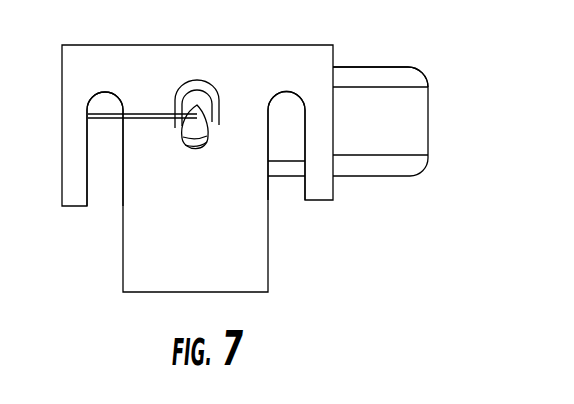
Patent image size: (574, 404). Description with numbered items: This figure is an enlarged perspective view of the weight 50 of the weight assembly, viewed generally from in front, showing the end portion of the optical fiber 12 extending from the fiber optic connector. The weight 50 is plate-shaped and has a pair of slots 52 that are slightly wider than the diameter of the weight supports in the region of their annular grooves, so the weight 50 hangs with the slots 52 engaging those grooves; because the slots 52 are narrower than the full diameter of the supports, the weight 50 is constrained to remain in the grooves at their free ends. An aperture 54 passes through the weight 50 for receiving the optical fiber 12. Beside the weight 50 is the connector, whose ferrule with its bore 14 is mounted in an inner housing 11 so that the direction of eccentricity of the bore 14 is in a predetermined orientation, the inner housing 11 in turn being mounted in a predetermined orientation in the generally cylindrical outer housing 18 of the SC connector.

The inner housing 11 is at (413, 112).
The optical fiber 12 is at (143, 110).
The bore 14 is at (203, 90).
The outer housing 18 is at (358, 75).
The weight 50 is at (328, 125).
The slots 52 is at (88, 140).
The aperture 54 is at (200, 153).